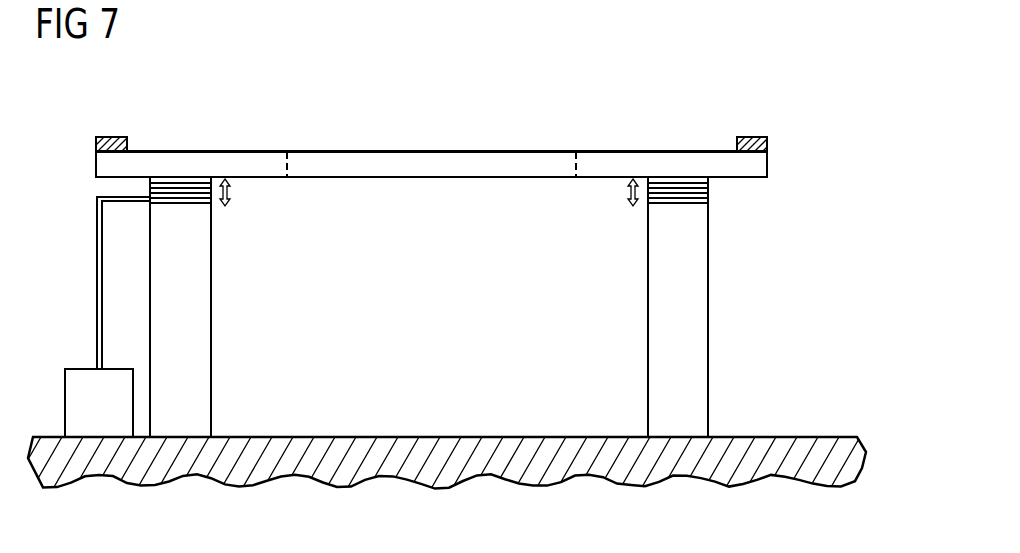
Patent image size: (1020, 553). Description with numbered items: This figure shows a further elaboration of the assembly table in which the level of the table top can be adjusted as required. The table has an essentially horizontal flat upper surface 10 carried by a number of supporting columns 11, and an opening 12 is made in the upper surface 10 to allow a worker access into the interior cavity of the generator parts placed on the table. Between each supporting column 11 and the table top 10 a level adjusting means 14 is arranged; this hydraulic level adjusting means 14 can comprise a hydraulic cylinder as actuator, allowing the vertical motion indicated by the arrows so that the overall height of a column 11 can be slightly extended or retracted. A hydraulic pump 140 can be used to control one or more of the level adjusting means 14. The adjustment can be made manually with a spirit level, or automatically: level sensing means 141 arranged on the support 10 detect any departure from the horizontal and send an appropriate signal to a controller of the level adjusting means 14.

The upper surface 10 is at (668, 160).
The supporting pillar 11 is at (200, 309).
The opening 12 is at (288, 163).
The level adjusting means 14 is at (183, 193).
The hydraulic pump 140 is at (87, 378).
The level sensing means 141 is at (112, 134).